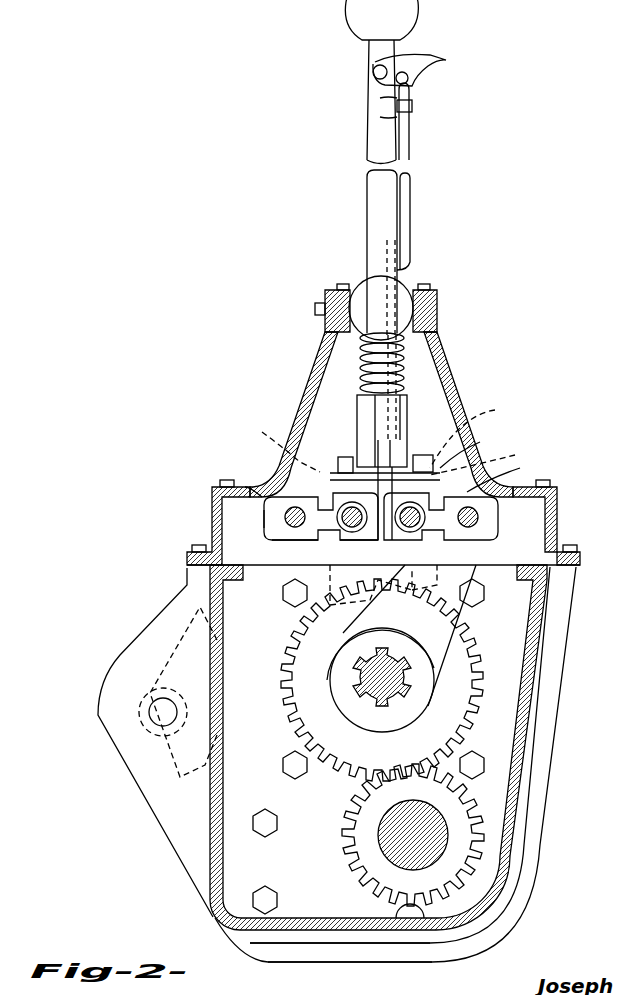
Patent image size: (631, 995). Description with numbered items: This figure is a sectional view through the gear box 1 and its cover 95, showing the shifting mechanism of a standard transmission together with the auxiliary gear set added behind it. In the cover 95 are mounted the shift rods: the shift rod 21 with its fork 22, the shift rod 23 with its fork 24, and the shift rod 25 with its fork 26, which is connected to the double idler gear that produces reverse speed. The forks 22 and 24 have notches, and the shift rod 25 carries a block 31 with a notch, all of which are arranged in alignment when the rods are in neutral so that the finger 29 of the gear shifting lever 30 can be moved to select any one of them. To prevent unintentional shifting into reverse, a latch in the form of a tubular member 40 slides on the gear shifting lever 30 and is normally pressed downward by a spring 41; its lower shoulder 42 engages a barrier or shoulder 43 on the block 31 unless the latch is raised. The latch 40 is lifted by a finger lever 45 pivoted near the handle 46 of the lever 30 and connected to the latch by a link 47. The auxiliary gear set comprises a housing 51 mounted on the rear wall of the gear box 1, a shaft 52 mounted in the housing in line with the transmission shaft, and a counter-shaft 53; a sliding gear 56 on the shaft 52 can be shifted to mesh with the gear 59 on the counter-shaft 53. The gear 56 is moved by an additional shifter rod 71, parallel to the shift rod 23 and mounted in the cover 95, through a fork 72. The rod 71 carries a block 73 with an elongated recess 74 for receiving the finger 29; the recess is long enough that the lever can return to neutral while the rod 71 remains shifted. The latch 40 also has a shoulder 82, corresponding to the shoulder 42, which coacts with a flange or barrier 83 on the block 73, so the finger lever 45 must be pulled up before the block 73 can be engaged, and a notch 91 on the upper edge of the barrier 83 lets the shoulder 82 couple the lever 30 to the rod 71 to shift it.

The gear box 1 is at (522, 896).
The shift rod 21 is at (340, 495).
The fork 22 is at (340, 548).
The shift rod 23 is at (425, 540).
The fork 24 is at (382, 545).
The shift rod 25 is at (262, 518).
The fork 26 is at (160, 634).
The finger 29 is at (275, 445).
The gear shifting lever 30 is at (370, 222).
The block 31 is at (290, 497).
The latch 40 is at (410, 400).
The spring 41 is at (404, 345).
The shoulder 42 is at (360, 455).
The barrier or shoulder 43 is at (343, 465).
The finger lever 45 is at (446, 60).
The handle 46 is at (353, 27).
The link 47 is at (412, 134).
The housing 51 is at (374, 928).
The shaft 52 is at (376, 704).
The counter-shaft 53 is at (399, 842).
The sliding gear 56 is at (472, 680).
The gear 59 is at (478, 818).
The shifter rod 71 is at (490, 522).
The fork 72 is at (472, 612).
The block 73 is at (520, 468).
The elongated recess 74 is at (515, 455).
The shoulder 82 is at (415, 456).
The flange or barrier 83 is at (480, 442).
The notch 91 is at (495, 410).
The cover 95 is at (560, 518).